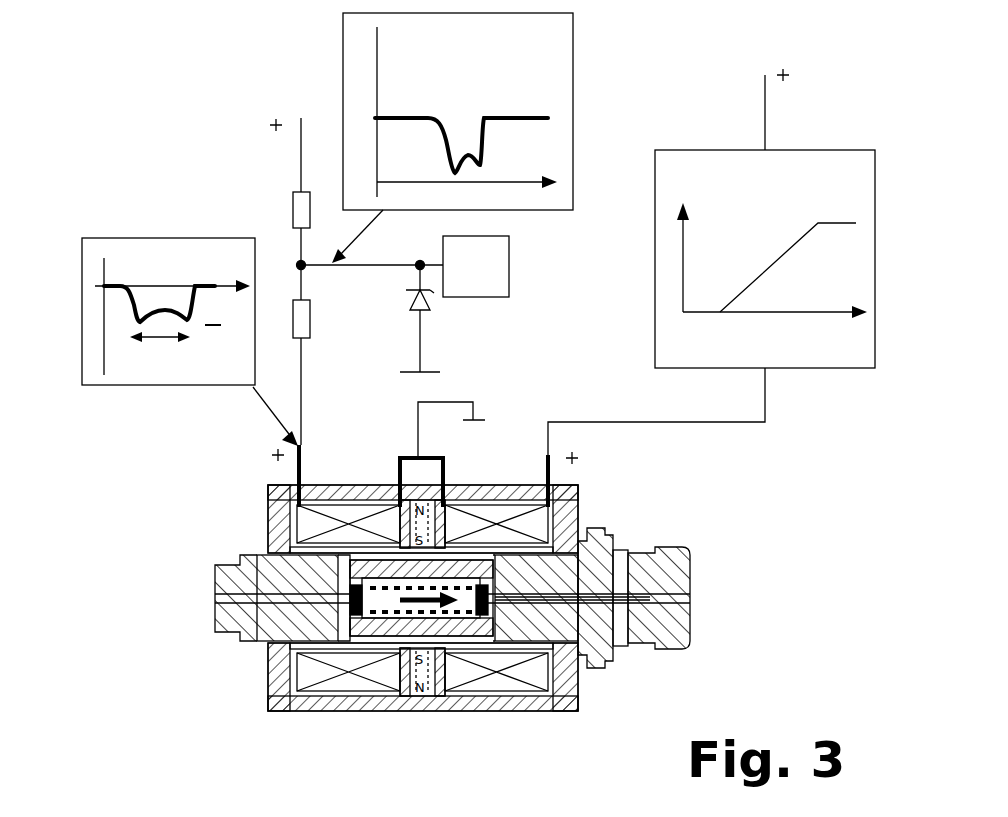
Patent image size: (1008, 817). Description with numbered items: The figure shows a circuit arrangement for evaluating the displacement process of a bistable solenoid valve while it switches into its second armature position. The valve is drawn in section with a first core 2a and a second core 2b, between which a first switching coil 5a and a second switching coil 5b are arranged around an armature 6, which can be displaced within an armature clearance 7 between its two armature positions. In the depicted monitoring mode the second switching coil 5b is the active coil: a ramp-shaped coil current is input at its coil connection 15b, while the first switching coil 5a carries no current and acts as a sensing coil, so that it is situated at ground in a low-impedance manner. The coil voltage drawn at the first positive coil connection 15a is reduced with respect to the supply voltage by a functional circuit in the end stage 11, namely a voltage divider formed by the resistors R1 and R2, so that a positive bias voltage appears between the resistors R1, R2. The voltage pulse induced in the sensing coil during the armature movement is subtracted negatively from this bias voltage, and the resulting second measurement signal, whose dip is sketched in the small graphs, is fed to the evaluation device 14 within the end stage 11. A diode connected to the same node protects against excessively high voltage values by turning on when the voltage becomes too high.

The end stage 11 is at (158, 130).
The resistor R2 is at (296, 195).
The resistor R1 is at (311, 320).
The evaluation device 14 is at (460, 297).
The first positive coil connection 15a is at (300, 478).
The second coil connection 15b is at (545, 480).
The armature clearance 7 is at (695, 562).
The first core 2a is at (215, 640).
The second core 2b is at (692, 642).
The first switching coil 5a is at (345, 683).
The second switching coil 5b is at (490, 683).
The armature 6 is at (398, 630).